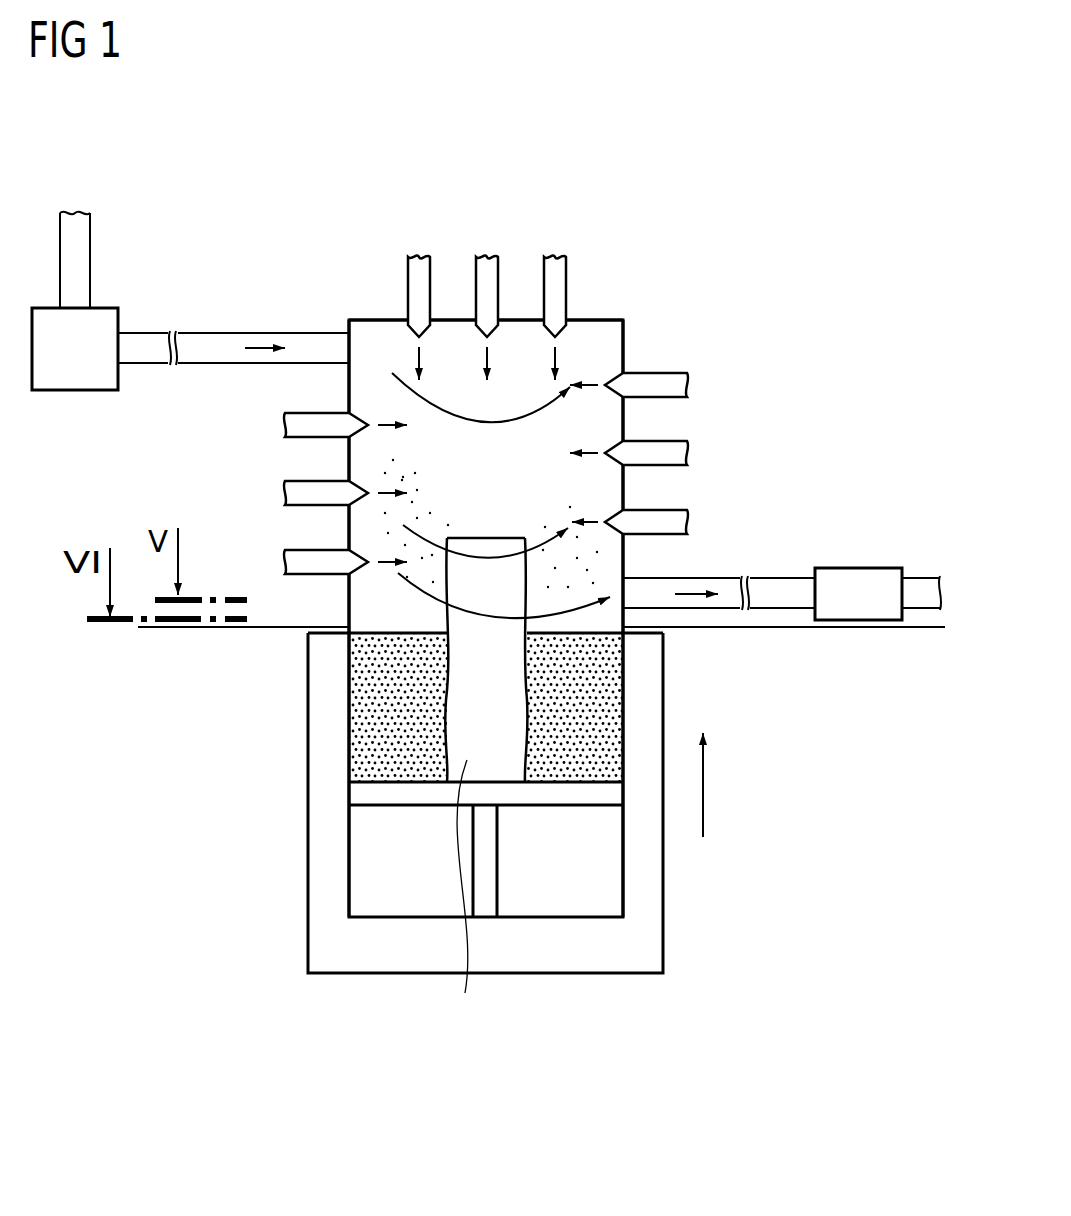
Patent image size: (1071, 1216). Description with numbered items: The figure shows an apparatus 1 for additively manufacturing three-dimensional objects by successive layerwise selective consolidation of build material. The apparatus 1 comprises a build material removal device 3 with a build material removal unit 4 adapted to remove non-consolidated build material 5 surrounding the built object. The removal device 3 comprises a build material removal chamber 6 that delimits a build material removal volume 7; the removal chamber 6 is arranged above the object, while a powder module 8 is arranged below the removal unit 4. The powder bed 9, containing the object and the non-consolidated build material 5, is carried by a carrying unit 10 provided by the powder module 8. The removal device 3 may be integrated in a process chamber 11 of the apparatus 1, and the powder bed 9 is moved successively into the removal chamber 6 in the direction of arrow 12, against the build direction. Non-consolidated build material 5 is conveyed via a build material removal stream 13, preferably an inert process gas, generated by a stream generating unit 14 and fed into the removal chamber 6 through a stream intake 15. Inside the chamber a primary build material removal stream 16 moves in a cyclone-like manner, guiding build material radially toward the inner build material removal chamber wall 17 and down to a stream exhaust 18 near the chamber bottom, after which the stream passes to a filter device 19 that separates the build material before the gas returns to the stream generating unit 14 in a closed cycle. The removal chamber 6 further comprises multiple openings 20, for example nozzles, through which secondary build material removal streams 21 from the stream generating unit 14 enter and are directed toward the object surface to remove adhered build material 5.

The apparatus 1 is at (843, 798).
The build material removal device 3 is at (308, 175).
The build material removal unit 4 is at (638, 270).
The non-consolidated build material 5 is at (348, 730).
The build material removal chamber 6 is at (590, 328).
The build material removal volume 7 is at (493, 481).
The powder module 8 is at (283, 1012).
The powder bed 9 is at (616, 703).
The carrying unit 10 is at (517, 820).
The process chamber 11 is at (846, 372).
The arrow 12 is at (703, 790).
The build material removal stream 13 is at (453, 410).
The stream generating unit 14 is at (62, 390).
The stream intake 15 is at (312, 332).
The primary build material removal stream 16 is at (396, 378).
The inner build material removal chamber wall 17 is at (349, 525).
The stream exhaust 18 is at (697, 578).
The filter device 19 is at (867, 568).
The openings 20 is at (553, 268).
The secondary build material removal streams 21 is at (385, 425).